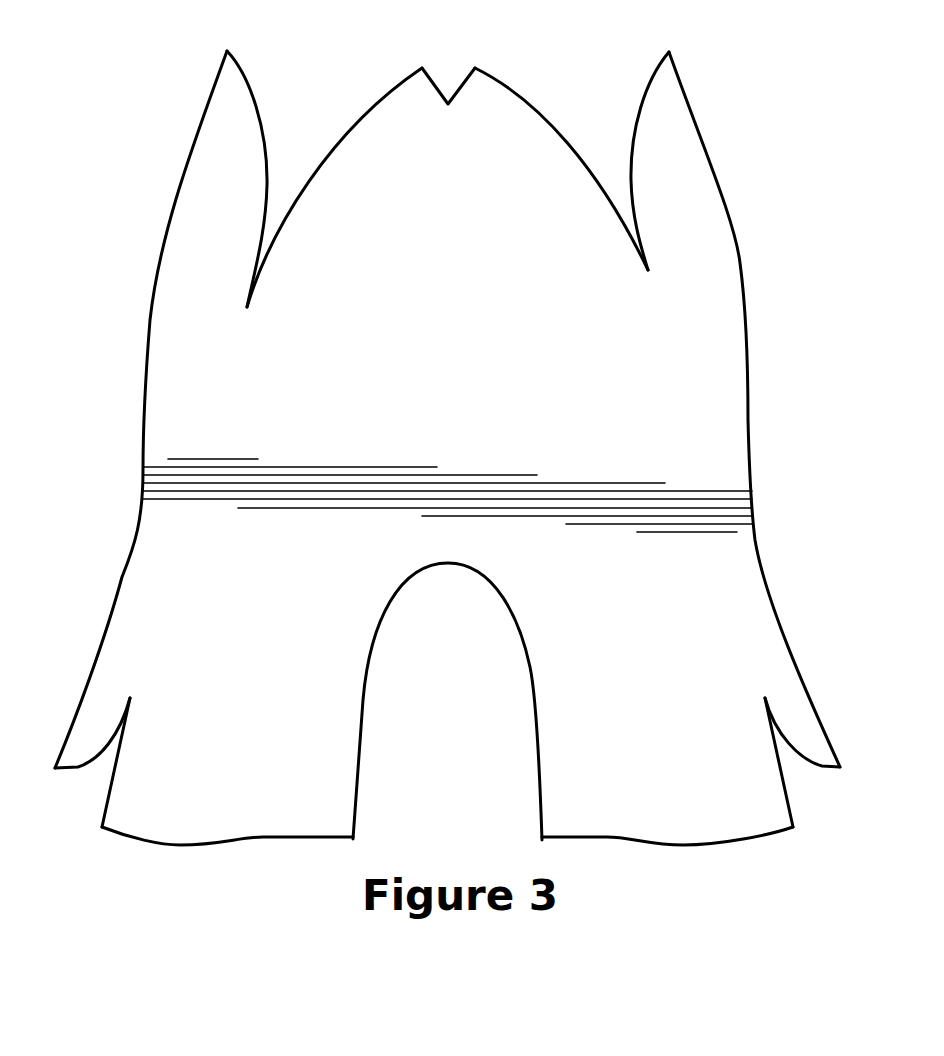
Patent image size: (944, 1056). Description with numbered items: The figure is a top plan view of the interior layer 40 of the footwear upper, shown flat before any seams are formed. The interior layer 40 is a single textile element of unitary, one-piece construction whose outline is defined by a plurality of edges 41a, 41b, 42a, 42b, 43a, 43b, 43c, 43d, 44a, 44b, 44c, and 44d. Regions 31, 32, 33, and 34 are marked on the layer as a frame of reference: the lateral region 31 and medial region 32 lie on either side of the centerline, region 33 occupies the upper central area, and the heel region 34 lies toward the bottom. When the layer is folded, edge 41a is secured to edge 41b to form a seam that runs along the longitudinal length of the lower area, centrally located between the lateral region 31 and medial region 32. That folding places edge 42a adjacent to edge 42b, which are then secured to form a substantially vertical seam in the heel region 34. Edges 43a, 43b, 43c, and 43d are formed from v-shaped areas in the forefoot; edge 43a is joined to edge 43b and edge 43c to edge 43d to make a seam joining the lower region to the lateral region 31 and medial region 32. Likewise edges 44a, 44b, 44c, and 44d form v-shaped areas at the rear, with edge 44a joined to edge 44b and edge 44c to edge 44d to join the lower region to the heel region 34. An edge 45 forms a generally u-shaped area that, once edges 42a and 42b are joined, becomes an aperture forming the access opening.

The interior layer 40 is at (168, 71).
The edge 41a is at (742, 266).
The edge 41b is at (156, 269).
The edge 43a is at (643, 80).
The edge 43b is at (551, 118).
The edge 43c is at (253, 78).
The edge 43d is at (352, 118).
The region 33 is at (433, 322).
The medial region 32 is at (256, 436).
The lateral region 31 is at (684, 436).
The edge 45 is at (363, 703).
The heel region 34 is at (236, 788).
The edge 44a is at (823, 768).
The edge 44b is at (794, 818).
The edge 44c is at (78, 768).
The edge 44d is at (103, 815).
The edge 42a is at (683, 846).
The edge 42b is at (213, 846).